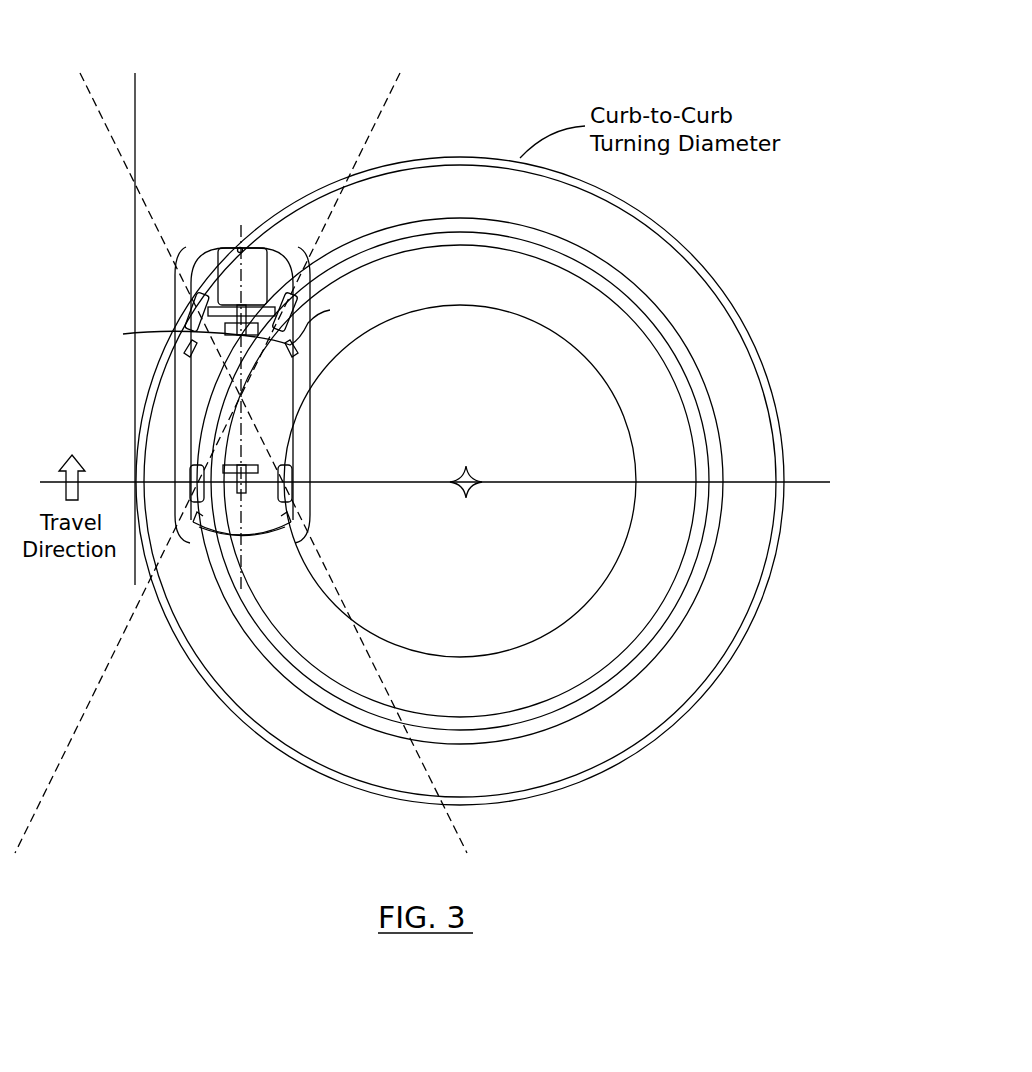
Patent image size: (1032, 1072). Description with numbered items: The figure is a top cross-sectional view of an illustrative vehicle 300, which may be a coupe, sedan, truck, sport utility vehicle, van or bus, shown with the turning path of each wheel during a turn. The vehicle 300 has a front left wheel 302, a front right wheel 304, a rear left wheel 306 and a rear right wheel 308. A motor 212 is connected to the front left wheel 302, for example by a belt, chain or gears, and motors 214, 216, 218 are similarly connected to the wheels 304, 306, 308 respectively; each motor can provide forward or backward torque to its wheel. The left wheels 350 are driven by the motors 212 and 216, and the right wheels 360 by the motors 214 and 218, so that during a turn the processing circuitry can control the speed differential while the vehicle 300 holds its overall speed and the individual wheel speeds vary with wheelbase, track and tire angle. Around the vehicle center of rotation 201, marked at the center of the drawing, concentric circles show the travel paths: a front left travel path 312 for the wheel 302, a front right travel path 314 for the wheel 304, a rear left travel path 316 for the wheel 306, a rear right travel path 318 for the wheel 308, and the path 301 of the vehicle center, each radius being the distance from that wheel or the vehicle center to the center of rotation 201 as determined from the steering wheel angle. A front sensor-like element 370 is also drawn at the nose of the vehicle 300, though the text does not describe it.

The vehicle 300 is at (117, 32).
The center of rotation 201 is at (480, 487).
The motor 212 is at (185, 345).
The motor 214 is at (298, 348).
The motor 216 is at (238, 465).
The motor 218 is at (248, 485).
The vehicle center travel path 301 is at (582, 685).
The front left wheel 302 is at (195, 300).
The front right wheel 304 is at (292, 322).
The rear left wheel 306 is at (192, 470).
The rear right wheel 308 is at (292, 473).
The front left travel path 312 is at (684, 258).
The front right travel path 314 is at (678, 600).
The rear left travel path 316 is at (676, 330).
The rear right travel path 318 is at (630, 523).
The left wheels 350 is at (175, 392).
The right wheels 360 is at (312, 400).
The front sensor 370 is at (248, 254).